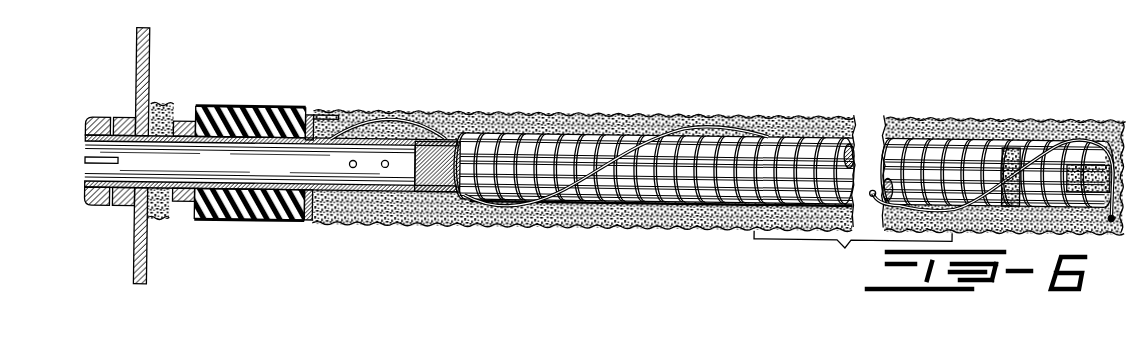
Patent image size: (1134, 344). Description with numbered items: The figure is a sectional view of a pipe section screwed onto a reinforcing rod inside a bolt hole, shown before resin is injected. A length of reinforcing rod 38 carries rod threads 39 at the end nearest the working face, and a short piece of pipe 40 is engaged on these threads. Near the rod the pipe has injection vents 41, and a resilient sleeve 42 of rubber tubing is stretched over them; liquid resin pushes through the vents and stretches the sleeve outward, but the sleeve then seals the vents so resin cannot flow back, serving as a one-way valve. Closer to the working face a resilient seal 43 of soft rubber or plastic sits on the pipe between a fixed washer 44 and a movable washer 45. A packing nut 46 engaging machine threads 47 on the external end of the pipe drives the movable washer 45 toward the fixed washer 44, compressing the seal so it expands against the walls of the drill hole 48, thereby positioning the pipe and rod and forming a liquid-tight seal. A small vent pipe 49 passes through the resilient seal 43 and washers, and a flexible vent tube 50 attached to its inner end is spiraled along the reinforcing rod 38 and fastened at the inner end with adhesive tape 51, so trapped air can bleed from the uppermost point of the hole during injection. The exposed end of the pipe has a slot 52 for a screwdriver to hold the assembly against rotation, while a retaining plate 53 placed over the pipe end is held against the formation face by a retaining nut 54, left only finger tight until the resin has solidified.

The reinforcing rod 38 is at (752, 129).
The rod threads 39 is at (442, 135).
The pipe 40 is at (328, 132).
The injection vents 41 is at (350, 164).
The resilient sleeve 42 is at (372, 193).
The resilient seal 43 is at (263, 103).
The fixed washer 44 is at (310, 107).
The movable washer 45 is at (197, 100).
The packing nut 46 is at (178, 102).
The machine threads 47 is at (152, 102).
The drill hole 48 is at (618, 118).
The vent pipe 49 is at (233, 101).
The flexible vent tube 50 is at (390, 106).
The adhesive tape 51 is at (1017, 136).
The slot 52 is at (92, 157).
The retaining plate 53 is at (133, 254).
The retaining nut 54 is at (123, 206).